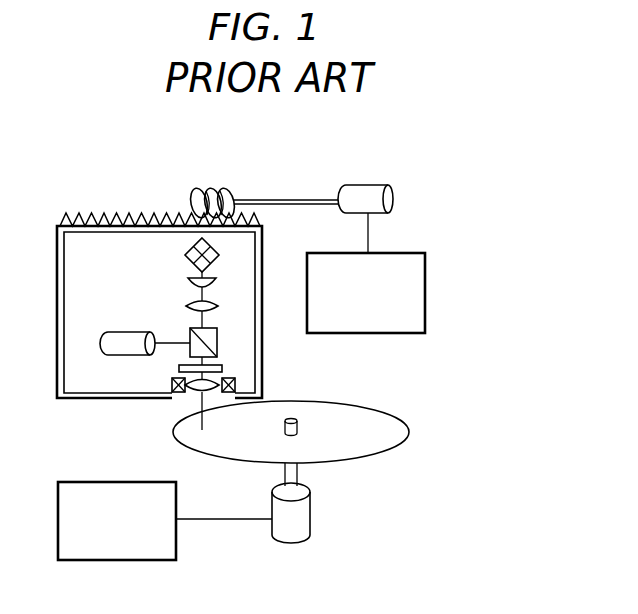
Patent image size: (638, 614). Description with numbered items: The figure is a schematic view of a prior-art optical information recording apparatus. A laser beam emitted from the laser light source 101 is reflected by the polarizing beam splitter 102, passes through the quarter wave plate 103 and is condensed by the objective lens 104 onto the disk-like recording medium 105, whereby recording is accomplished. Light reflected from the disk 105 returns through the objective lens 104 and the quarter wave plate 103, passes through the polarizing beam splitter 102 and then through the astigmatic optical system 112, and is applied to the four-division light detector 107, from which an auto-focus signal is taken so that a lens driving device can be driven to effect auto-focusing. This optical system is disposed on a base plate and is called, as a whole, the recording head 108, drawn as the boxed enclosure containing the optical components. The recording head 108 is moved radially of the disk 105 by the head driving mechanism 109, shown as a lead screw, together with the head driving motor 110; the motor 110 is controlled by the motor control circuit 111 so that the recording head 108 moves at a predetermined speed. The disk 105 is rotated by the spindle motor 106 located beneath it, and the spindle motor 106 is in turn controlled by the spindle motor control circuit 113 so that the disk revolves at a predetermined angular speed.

The laser light source 101 is at (112, 331).
The polarizing beam splitter 102 is at (216, 330).
The quarter wave plate 103 is at (222, 352).
The objective lens 104 is at (195, 393).
The disk-like recording medium 105 is at (322, 402).
The spindle motor 106 is at (310, 511).
The four-division light detector 107 is at (213, 248).
The recording head 108 is at (73, 398).
The head driving mechanism 109 is at (207, 187).
The head driving motor 110 is at (358, 183).
The motor control circuit 111 is at (428, 274).
The astigmatic optical system 112 is at (181, 275).
The spindle motor control circuit 113 is at (177, 502).